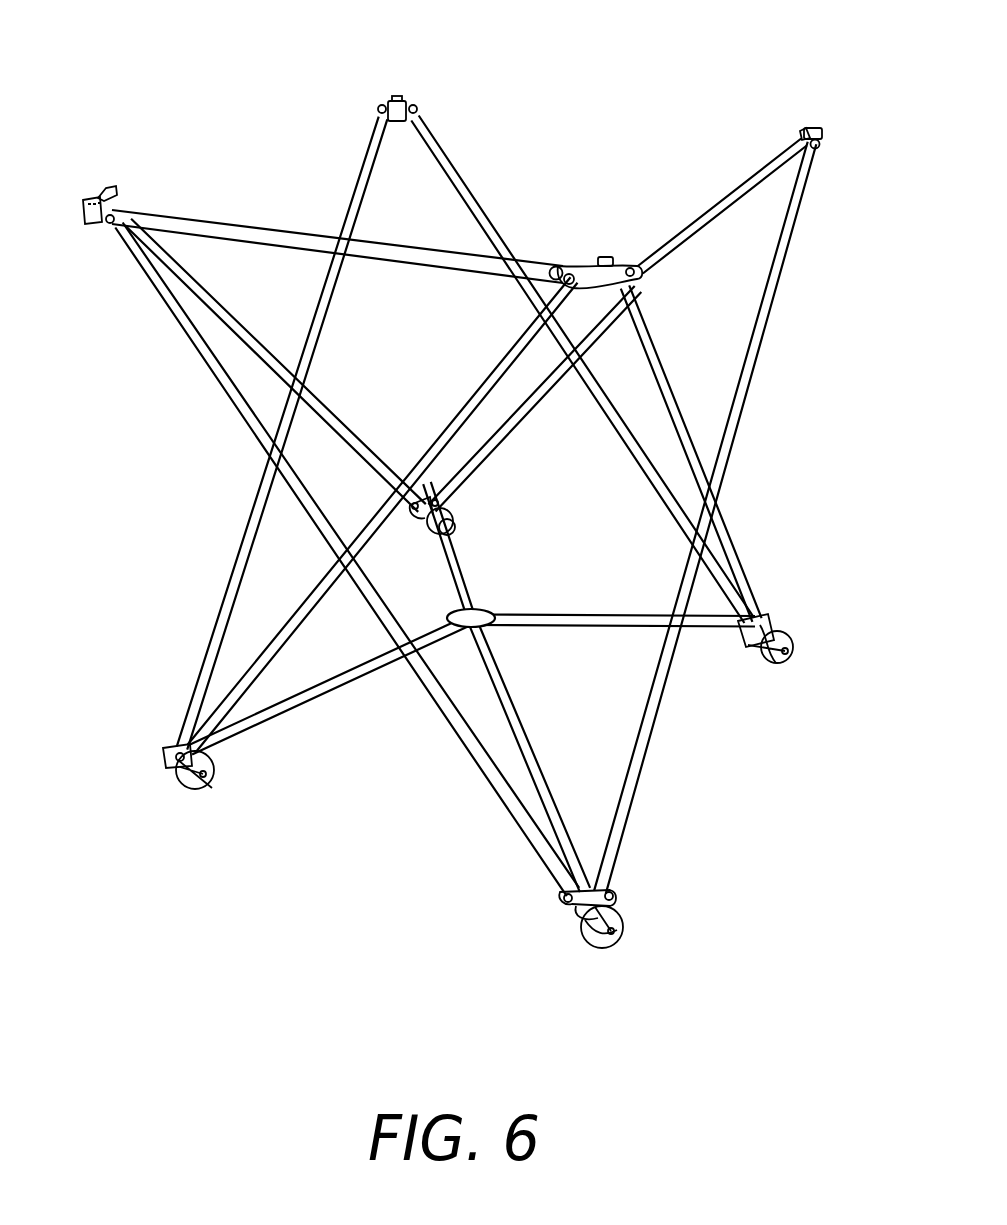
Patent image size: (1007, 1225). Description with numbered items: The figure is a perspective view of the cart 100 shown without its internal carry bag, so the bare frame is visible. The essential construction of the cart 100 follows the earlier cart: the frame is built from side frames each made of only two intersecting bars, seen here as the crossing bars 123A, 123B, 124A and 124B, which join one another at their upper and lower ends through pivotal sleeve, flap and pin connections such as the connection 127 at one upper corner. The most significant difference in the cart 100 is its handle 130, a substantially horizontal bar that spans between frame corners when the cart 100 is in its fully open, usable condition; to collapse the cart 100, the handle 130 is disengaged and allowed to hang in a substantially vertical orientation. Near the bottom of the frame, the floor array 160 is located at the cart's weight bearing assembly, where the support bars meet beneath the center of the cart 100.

The cart 100 is at (163, 100).
The corner bracket 127 is at (82, 227).
The handle 130 is at (150, 226).
The leg 123A is at (210, 652).
The leg 123B is at (323, 415).
The leg 124A is at (692, 233).
The leg 124B is at (443, 152).
The floor array 160 is at (502, 597).